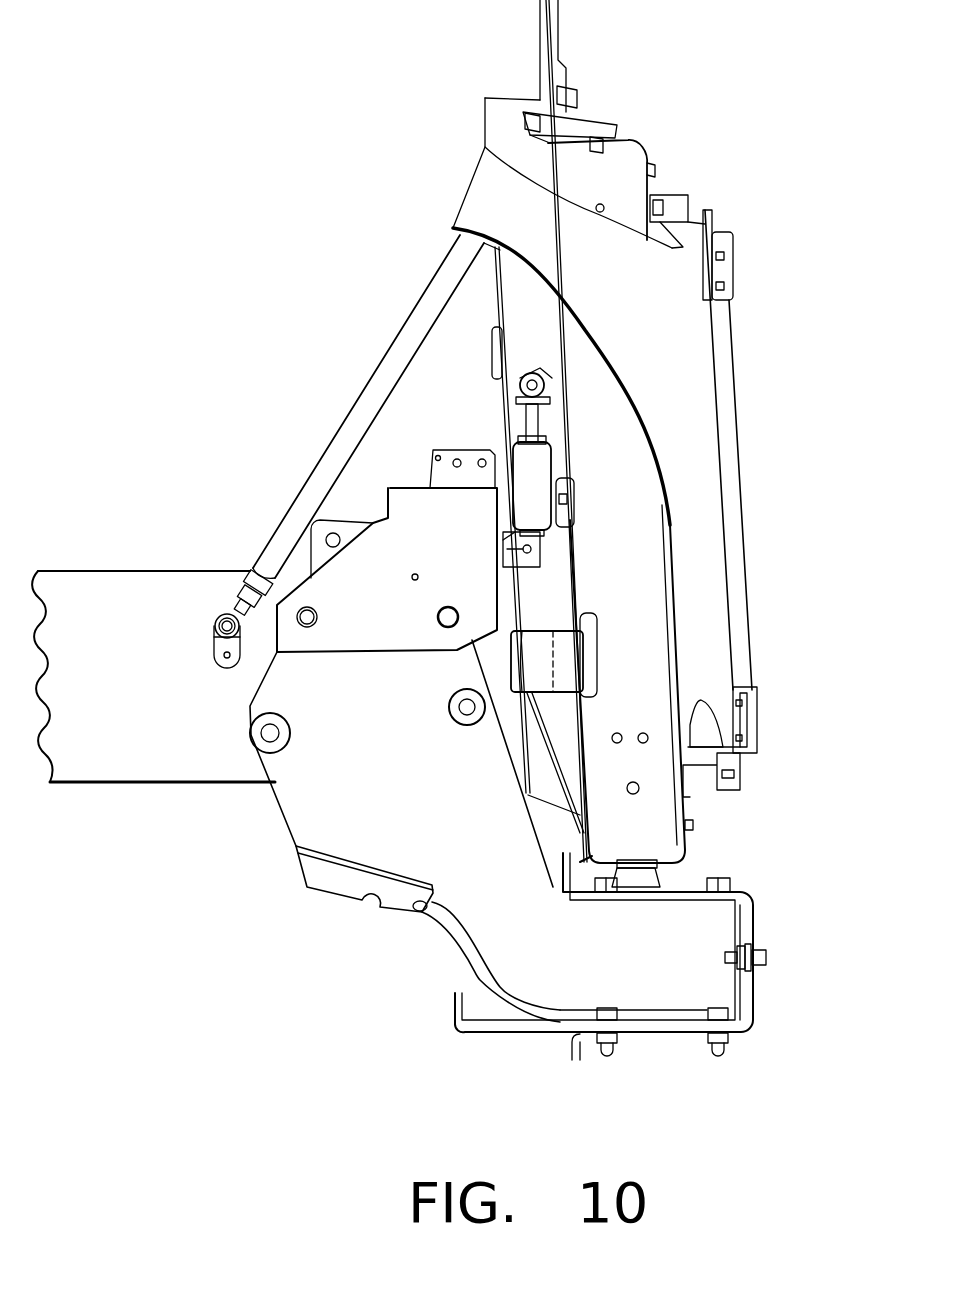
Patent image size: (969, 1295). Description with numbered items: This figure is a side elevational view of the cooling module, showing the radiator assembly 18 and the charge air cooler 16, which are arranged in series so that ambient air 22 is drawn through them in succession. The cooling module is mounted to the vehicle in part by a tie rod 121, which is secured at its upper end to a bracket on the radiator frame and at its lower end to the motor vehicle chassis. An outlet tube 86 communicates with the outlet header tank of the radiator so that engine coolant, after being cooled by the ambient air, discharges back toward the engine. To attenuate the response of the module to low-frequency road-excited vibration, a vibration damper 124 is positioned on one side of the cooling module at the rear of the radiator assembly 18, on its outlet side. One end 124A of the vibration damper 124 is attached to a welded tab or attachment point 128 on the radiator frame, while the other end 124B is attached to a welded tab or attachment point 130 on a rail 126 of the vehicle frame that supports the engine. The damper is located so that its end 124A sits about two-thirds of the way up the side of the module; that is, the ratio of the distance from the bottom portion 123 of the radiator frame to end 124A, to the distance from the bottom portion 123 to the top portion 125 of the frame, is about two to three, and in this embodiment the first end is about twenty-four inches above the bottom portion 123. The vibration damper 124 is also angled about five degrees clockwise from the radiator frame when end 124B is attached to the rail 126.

The top portion 125 is at (627, 157).
The radiator assembly 18 is at (627, 153).
The charge air cooler 16 is at (680, 282).
The ambient air 22 is at (728, 397).
The attachment point 128 is at (540, 388).
The end of vibration damper 124A is at (517, 398).
The vibration damper 124 is at (537, 465).
The end of vibration damper 124B is at (540, 547).
The attachment point 130 is at (516, 549).
The rail 126 is at (366, 613).
The outlet tube 86 is at (530, 659).
The tie rod 121 is at (410, 328).
The bottom portion 123 is at (683, 853).